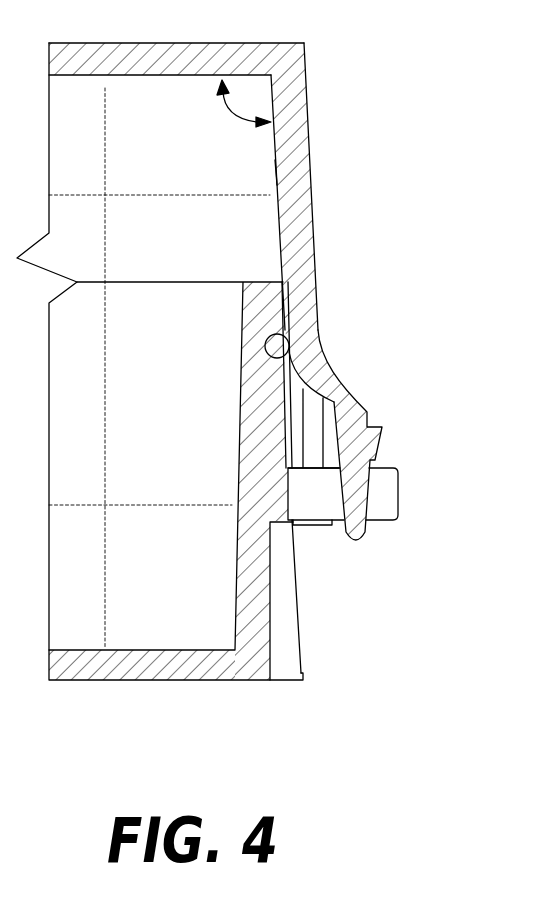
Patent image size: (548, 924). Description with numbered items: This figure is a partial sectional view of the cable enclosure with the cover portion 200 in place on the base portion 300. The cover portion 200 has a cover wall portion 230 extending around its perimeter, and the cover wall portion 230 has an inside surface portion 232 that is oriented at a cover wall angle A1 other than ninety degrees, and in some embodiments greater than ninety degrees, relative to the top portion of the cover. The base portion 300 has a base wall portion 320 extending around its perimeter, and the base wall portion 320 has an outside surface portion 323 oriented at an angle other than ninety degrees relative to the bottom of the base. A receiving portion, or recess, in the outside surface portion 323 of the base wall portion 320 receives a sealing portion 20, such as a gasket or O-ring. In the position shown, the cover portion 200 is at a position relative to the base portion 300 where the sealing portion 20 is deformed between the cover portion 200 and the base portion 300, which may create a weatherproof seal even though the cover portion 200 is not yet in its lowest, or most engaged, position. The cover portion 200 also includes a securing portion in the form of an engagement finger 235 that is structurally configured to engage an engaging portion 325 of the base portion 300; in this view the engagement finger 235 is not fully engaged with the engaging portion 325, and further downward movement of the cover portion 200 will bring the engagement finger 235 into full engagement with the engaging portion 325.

The cover portion 200 is at (282, 60).
The cover wall portion 230 is at (303, 213).
The inside surface portion 232 is at (279, 181).
The engagement finger 235 is at (360, 407).
The cover wall angle A1 is at (236, 110).
The base portion 300 is at (248, 667).
The base wall portion 320 is at (268, 495).
The outside surface portion 323 is at (287, 399).
The sealing portion 20 is at (288, 346).
The engaging portion 325 is at (398, 499).